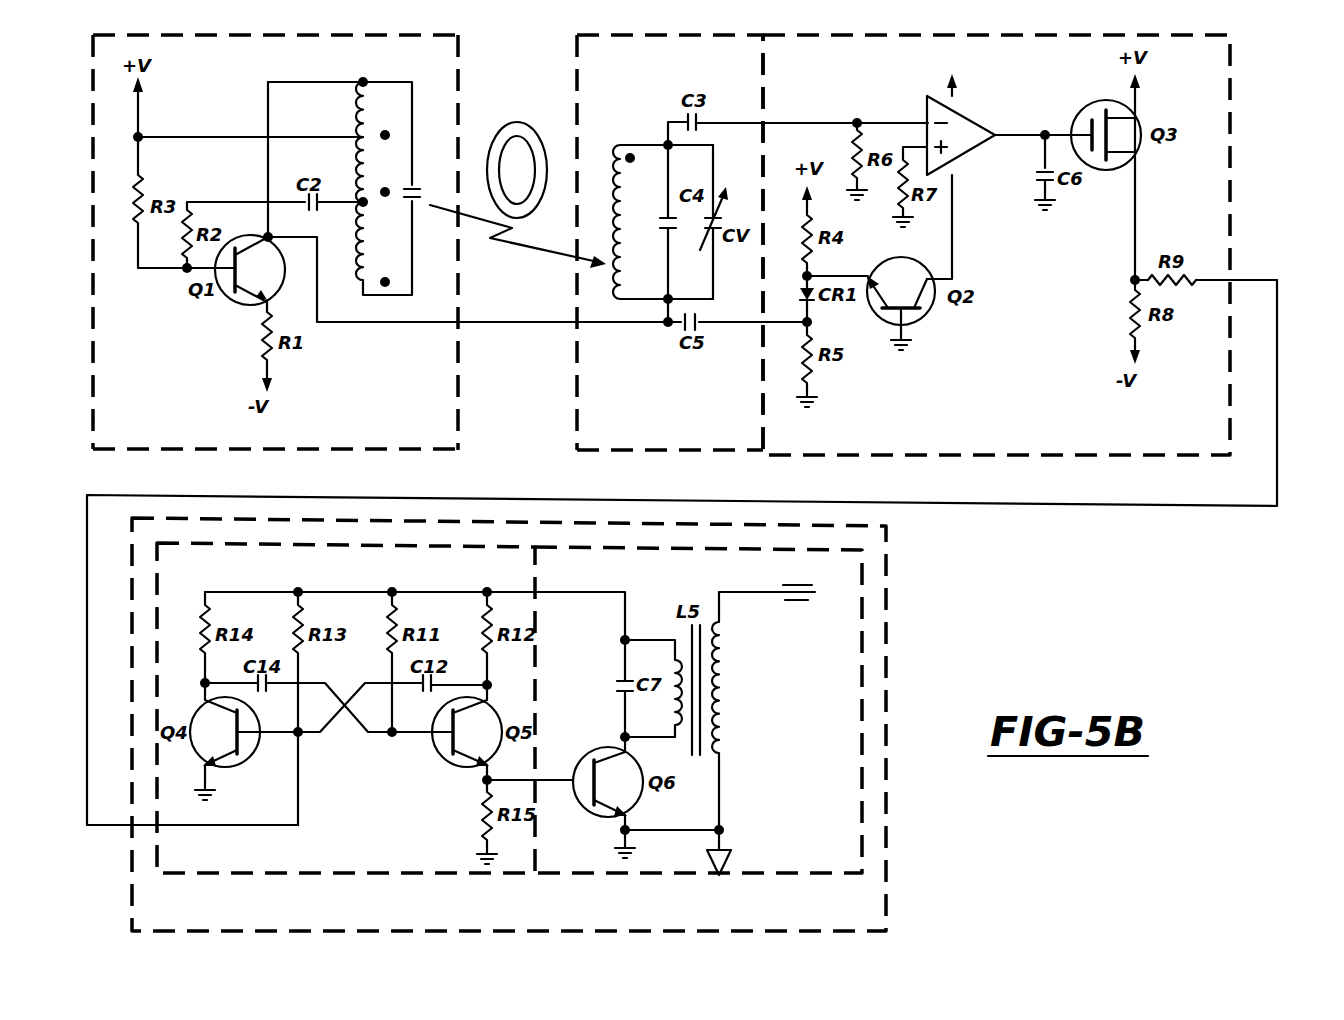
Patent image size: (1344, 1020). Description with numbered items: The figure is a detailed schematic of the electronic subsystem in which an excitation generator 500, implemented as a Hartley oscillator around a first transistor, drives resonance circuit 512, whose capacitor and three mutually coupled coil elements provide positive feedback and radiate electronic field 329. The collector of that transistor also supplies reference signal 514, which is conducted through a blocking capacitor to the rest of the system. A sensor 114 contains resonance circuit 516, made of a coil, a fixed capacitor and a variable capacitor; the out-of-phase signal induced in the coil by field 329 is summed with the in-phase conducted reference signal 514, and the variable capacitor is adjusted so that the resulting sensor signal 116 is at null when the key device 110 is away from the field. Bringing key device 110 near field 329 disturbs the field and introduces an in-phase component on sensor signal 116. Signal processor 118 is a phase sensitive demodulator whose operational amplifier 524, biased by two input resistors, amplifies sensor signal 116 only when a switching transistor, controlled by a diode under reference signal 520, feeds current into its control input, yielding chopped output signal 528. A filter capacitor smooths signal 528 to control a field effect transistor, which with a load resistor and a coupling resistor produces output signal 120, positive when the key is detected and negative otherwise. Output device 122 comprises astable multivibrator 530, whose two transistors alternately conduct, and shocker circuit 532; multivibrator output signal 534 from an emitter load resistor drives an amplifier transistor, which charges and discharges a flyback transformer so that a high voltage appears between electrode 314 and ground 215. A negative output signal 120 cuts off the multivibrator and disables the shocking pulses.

The excitation generator 500 is at (310, 454).
The resonance circuit 512 is at (400, 68).
The reference signal 514 is at (272, 232).
The key device 110 is at (516, 122).
The electronic field 329 is at (536, 252).
The sensor 114 is at (677, 454).
The resonance circuit 516 is at (642, 134).
The reference signal 520 is at (723, 320).
The sensor signal 116 is at (742, 121).
The signal processor 118 is at (972, 454).
The operational amplifier 524 is at (928, 96).
The output signal 528 is at (1032, 134).
The output signal 120 is at (1279, 490).
The output device 122 is at (517, 939).
The astable multivibrator 530 is at (368, 874).
The shocker circuit 532 is at (710, 886).
The multivibrator output signal 534 is at (552, 774).
The electrode 314 is at (821, 614).
The ground 215 is at (726, 852).